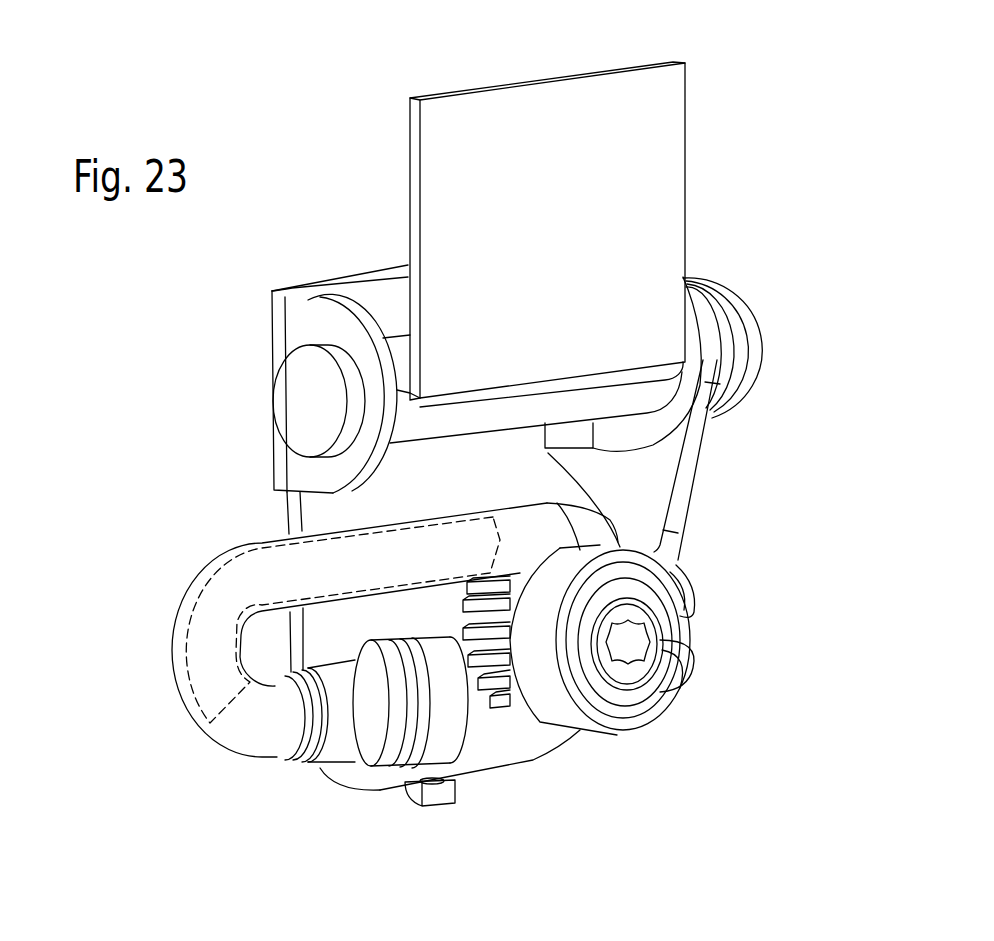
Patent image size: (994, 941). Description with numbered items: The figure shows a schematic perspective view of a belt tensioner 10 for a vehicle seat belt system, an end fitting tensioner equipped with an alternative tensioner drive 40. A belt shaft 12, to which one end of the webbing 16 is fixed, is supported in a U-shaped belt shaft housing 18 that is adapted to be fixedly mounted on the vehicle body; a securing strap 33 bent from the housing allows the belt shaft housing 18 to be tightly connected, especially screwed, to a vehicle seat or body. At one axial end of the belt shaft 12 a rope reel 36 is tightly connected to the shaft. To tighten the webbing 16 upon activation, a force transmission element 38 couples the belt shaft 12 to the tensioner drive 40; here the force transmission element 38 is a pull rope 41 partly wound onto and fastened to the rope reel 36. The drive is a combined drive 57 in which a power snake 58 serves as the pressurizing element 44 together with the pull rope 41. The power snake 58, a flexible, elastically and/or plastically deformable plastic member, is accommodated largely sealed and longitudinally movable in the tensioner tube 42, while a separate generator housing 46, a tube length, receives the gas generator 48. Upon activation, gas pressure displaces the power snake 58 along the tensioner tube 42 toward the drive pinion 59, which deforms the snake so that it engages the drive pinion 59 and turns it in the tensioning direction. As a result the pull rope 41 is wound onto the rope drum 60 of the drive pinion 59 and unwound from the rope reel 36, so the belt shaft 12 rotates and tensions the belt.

The belt tensioner 10 is at (113, 396).
The belt shaft 12 is at (297, 402).
The webbing 16 is at (660, 134).
The belt shaft housing 18 is at (332, 271).
The securing strap 33 is at (488, 757).
The rope reel 36 is at (757, 323).
The force transmission element 38 is at (738, 460).
The pull rope 41 is at (683, 477).
The tensioner drive 40 is at (233, 802).
The combined drive 57 is at (185, 760).
The tensioner tube 42 is at (256, 742).
The pressurizing element 44 is at (325, 630).
The power snake 58 is at (197, 628).
The generator housing 46 is at (403, 752).
The gas generator 48 is at (367, 725).
The drive pinion 59 is at (538, 725).
The rope drum 60 is at (640, 670).